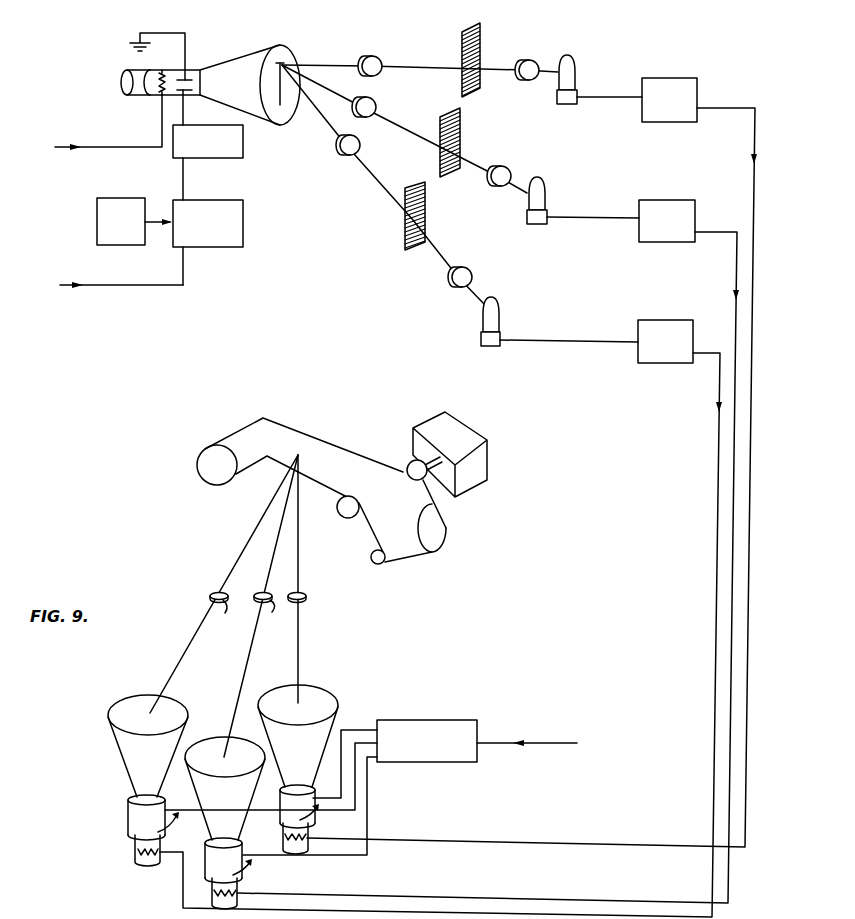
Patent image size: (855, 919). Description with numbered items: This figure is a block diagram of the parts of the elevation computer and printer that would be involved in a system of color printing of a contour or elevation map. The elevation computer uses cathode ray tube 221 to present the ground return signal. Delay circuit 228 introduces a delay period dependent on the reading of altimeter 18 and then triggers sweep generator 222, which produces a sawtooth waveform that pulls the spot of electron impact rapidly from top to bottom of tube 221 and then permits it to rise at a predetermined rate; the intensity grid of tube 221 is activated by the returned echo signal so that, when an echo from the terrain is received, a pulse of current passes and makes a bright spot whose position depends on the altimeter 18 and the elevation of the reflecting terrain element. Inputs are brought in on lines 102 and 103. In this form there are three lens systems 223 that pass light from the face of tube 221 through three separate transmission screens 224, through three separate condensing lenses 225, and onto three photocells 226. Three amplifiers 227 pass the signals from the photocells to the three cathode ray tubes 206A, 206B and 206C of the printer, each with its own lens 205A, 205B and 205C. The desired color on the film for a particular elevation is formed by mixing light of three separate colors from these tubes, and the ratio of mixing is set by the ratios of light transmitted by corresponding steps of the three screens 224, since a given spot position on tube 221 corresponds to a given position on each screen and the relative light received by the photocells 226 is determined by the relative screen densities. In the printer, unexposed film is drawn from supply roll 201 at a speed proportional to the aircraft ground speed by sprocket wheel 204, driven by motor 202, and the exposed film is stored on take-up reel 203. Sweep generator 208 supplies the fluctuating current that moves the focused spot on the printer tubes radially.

The altimeter 18 is at (134, 221).
The input line 102 is at (318, 514).
The input line 103 is at (108, 132).
The supply roll 201 is at (200, 478).
The motor 202 is at (455, 428).
The take-up reel 203 is at (382, 565).
The sprocket wheel 204 is at (337, 514).
The lens 205A is at (307, 598).
The lens 205B is at (262, 606).
The lens 205C is at (224, 584).
The cathode ray tube 206A is at (317, 693).
The cathode ray tube 206B is at (208, 747).
The cathode ray tube 206C is at (130, 705).
The sweep generator 208 is at (321, 787).
The cathode ray tube 221 is at (257, 60).
The sweep generator 222 is at (208, 162).
The lens systems 223 is at (383, 80).
The transmission screens 224 is at (403, 229).
The condensing lenses 225 is at (537, 36).
The photocells 226 is at (480, 345).
The amplifiers 227 is at (675, 363).
The delay circuit 228 is at (208, 242).